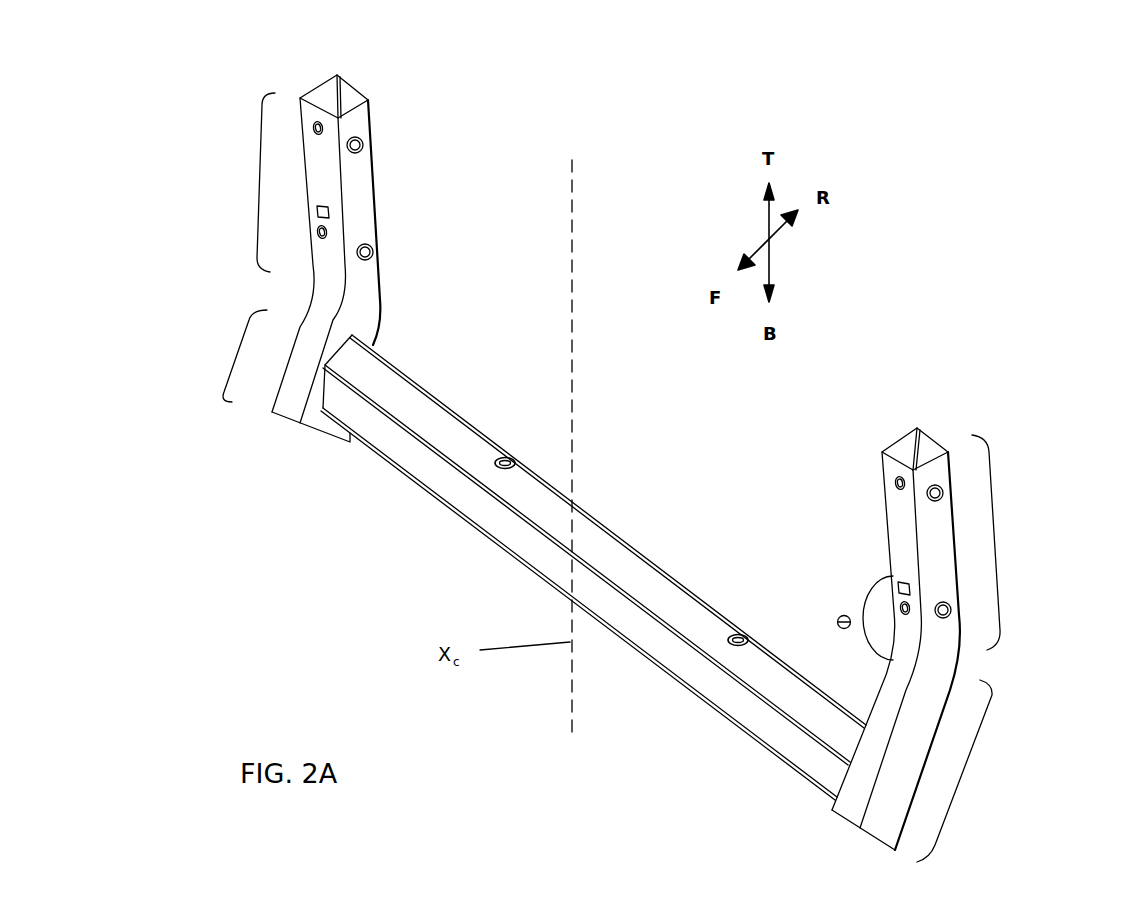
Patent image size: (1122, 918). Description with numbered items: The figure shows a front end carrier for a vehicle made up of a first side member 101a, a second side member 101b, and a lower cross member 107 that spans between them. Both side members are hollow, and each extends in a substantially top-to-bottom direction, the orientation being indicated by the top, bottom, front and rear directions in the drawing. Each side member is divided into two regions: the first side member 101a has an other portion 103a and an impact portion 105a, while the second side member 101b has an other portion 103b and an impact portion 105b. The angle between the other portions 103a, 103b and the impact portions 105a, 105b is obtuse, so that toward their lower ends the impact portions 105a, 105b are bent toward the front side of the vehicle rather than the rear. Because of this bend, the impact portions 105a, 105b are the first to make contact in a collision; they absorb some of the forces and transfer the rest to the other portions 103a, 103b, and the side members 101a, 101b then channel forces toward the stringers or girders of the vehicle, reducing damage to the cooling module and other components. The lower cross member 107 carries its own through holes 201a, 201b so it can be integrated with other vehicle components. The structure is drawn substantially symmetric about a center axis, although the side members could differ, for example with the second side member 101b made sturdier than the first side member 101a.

The first side member 101a is at (383, 66).
The second side member 101b is at (925, 390).
The other portion of first side member 103a is at (255, 178).
The other portion of second side member 103b is at (995, 555).
The impact portion of first side member 105a is at (235, 350).
The impact portion of second side member 105b is at (960, 785).
The lower cross member 107 is at (587, 537).
The through hole 201a is at (503, 456).
The through hole 201b is at (737, 633).